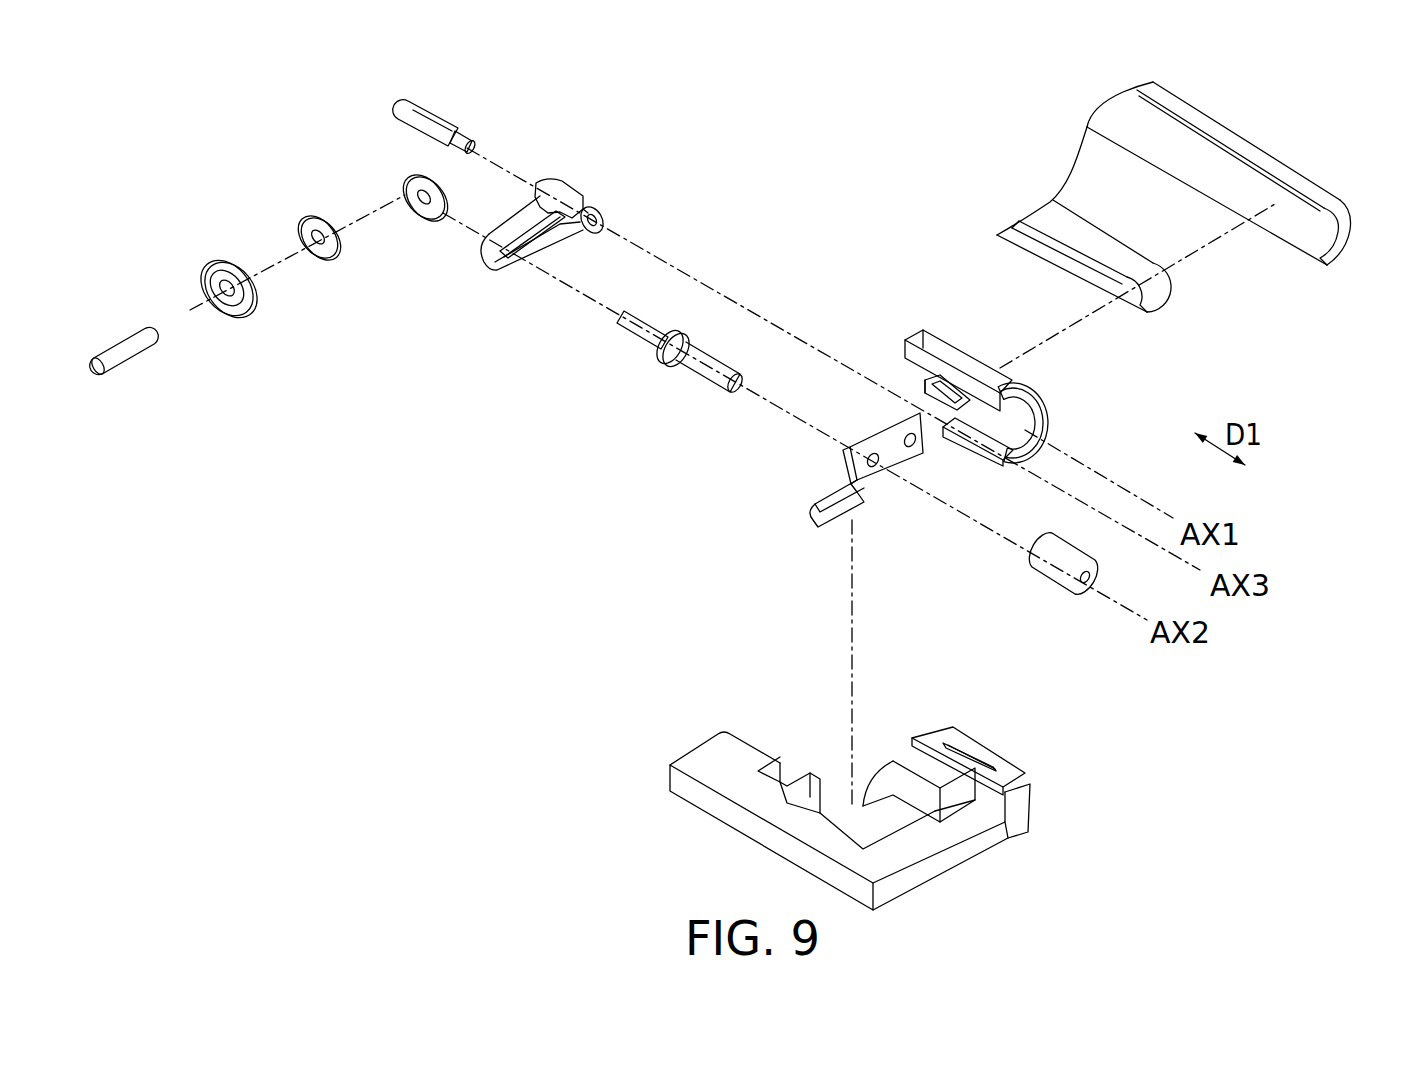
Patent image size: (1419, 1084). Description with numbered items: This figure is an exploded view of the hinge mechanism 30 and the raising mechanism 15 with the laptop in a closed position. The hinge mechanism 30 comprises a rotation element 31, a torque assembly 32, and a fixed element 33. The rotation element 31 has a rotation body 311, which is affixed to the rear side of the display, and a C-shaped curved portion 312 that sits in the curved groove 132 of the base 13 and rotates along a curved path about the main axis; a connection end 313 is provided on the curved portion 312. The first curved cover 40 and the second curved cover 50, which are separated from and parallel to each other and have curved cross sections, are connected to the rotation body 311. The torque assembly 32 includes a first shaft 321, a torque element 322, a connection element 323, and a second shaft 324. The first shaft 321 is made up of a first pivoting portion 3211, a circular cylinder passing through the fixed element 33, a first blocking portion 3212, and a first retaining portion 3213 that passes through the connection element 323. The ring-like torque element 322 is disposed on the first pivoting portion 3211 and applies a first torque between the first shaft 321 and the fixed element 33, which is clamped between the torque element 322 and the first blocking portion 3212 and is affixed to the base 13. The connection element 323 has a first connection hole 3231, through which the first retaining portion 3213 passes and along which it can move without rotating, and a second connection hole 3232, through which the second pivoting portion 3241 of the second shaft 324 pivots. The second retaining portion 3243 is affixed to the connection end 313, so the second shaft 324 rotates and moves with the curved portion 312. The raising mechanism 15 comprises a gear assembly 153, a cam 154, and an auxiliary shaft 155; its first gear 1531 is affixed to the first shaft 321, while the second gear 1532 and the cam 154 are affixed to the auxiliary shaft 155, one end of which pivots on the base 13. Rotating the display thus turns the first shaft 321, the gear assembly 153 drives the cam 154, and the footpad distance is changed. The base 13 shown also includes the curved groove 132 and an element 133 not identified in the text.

The base 13 is at (1020, 807).
The curved groove 132 is at (990, 753).
The stop plate 133 is at (925, 738).
The raising mechanism 15 is at (318, 318).
The gear assembly 153 is at (188, 148).
The first gear 1531 is at (417, 175).
The second gear 1532 is at (307, 215).
The cam 154 is at (220, 262).
The auxiliary shaft 155 is at (130, 357).
The hinge mechanism 30 is at (388, 468).
The rotation element 31 is at (1057, 404).
The rotation body 311 is at (945, 336).
The curved portion 312 is at (1031, 372).
The connection end 313 is at (977, 452).
The torque assembly 32 is at (385, 85).
The first shaft 321 is at (527, 368).
The first pivoting portion 3211 is at (697, 372).
The first blocking portion 3212 is at (662, 358).
The first retaining portion 3213 is at (645, 343).
The torque element 322 is at (1045, 598).
The connection element 323 is at (487, 272).
The first connection hole 3231 is at (530, 258).
The second connection hole 3232 is at (605, 212).
The second shaft 324 is at (566, 62).
The second pivoting portion 3241 is at (420, 110).
The second retaining portion 3243 is at (462, 140).
The fixed element 33 is at (828, 528).
The first curved cover 40 is at (1352, 230).
The second curved cover 50 is at (1167, 287).